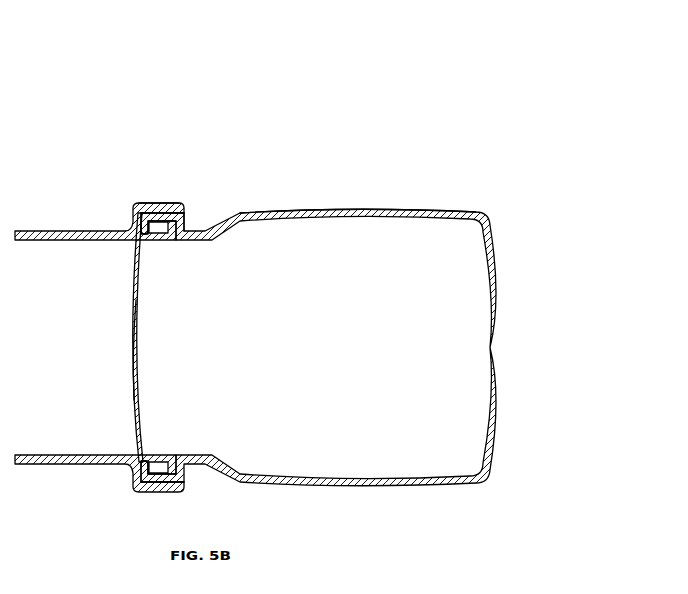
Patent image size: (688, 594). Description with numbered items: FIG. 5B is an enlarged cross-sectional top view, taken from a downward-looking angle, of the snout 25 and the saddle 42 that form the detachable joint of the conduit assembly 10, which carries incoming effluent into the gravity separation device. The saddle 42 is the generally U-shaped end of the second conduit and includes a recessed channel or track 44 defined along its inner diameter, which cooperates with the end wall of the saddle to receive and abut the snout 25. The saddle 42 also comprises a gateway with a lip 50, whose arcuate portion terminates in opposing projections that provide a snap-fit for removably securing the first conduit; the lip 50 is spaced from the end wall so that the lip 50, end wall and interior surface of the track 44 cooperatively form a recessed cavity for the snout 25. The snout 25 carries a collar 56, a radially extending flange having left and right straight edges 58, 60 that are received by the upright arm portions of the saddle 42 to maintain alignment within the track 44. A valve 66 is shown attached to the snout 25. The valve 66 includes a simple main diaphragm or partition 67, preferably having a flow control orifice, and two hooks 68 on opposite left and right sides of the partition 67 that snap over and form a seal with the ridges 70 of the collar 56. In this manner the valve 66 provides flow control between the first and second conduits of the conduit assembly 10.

The conduit assembly 10 is at (99, 254).
The snout 25 is at (283, 188).
The saddle 42 is at (126, 194).
The track 44 is at (141, 207).
The lip 50 is at (191, 220).
The collar 56 is at (178, 211).
The left straight edge 58 is at (165, 488).
The right straight edge 60 is at (165, 209).
The valve 66 is at (132, 280).
The main partition 67 is at (132, 317).
The hooks 68 is at (150, 210).
The ridges 70 is at (152, 463).